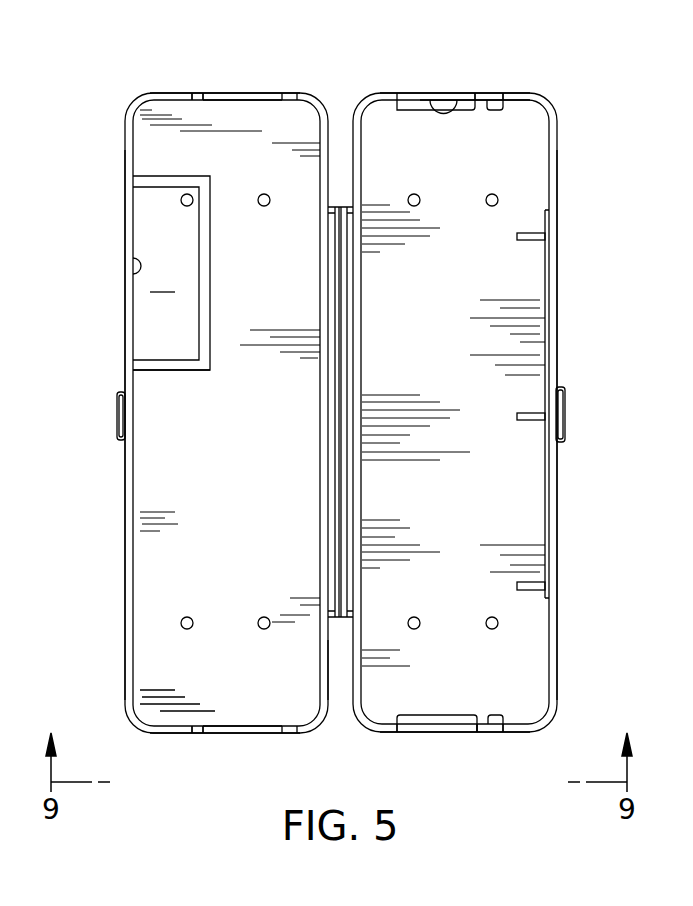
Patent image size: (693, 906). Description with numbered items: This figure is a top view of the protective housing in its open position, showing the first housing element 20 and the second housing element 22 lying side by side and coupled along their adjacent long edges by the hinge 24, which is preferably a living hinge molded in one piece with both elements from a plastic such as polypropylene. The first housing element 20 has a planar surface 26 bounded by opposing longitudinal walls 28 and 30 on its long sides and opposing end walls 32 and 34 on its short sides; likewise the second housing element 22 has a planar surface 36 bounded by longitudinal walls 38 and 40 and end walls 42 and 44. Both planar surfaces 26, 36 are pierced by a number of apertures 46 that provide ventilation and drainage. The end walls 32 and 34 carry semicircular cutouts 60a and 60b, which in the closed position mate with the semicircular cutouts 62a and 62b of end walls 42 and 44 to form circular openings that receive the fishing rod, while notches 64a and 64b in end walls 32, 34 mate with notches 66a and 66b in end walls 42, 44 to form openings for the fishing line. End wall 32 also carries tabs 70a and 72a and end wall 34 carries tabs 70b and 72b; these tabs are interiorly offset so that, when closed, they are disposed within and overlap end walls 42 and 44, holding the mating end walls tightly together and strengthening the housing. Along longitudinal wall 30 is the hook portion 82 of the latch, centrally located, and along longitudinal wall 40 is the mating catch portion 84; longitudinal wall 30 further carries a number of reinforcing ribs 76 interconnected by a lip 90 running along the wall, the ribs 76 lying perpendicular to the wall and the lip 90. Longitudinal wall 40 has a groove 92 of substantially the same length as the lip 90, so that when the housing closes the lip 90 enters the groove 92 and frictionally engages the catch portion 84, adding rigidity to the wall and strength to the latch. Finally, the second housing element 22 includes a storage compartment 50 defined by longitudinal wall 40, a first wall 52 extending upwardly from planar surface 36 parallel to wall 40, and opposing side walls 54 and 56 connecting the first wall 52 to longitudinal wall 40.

The first housing element 20 is at (553, 94).
The second housing element 22 is at (113, 116).
The hinge 24 is at (336, 207).
The planar surface 26 is at (493, 138).
The longitudinal wall 28 is at (346, 207).
The longitudinal wall 30 is at (556, 250).
The end wall 32 is at (510, 95).
The end wall 34 is at (500, 732).
The planar surface 36 is at (173, 685).
The longitudinal wall 38 is at (327, 665).
The longitudinal wall 40 is at (127, 512).
The end wall 42 is at (166, 93).
The end wall 44 is at (172, 733).
The apertures 46 is at (262, 206).
The storage compartment 50 is at (167, 315).
The first wall 52 is at (205, 270).
The side wall 54 is at (173, 177).
The side wall 56 is at (180, 371).
The semicircular cutout 60a is at (380, 93).
The semicircular cutout 60b is at (383, 730).
The semicircular cutout 62a is at (295, 93).
The semicircular cutout 62b is at (290, 733).
The notch 64a is at (483, 93).
The notch 64b is at (480, 732).
The notch 66a is at (199, 93).
The notch 66b is at (200, 733).
The tab 70a is at (428, 100).
The tab 70b is at (458, 717).
The tab 72a is at (493, 103).
The tab 72b is at (500, 717).
The reinforcing ribs 76 is at (523, 240).
The hook portion 82 is at (564, 403).
The catch portion 84 is at (118, 410).
The lip 90 is at (550, 316).
The groove 92 is at (130, 259).